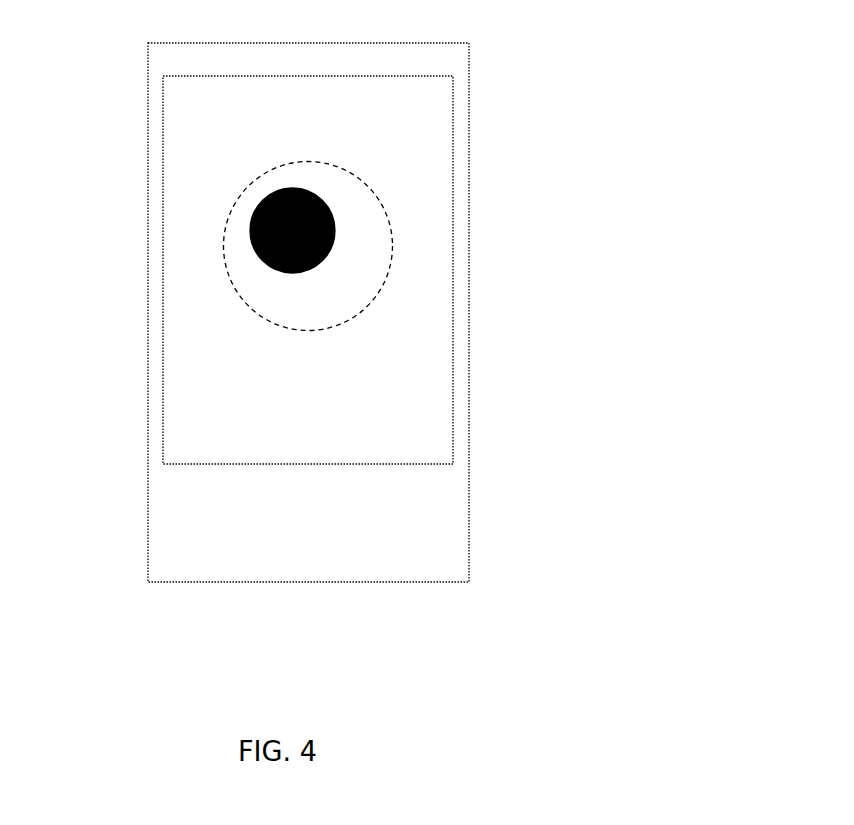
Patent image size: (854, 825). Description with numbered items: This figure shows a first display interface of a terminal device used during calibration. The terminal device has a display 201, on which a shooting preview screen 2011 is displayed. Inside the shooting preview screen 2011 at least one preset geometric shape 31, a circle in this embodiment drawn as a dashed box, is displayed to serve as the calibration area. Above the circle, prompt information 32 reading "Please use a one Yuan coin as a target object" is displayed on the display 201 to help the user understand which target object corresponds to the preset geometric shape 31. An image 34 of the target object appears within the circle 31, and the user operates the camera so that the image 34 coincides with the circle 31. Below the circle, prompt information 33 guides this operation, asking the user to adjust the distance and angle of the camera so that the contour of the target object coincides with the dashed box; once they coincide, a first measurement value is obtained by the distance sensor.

The display 201 is at (149, 128).
The shooting preview screen 2011 is at (164, 182).
The preset geometric figure 31 is at (240, 193).
The prompt information 32 is at (430, 134).
The prompt information 33 is at (439, 390).
The image of the target object 34 is at (250, 242).